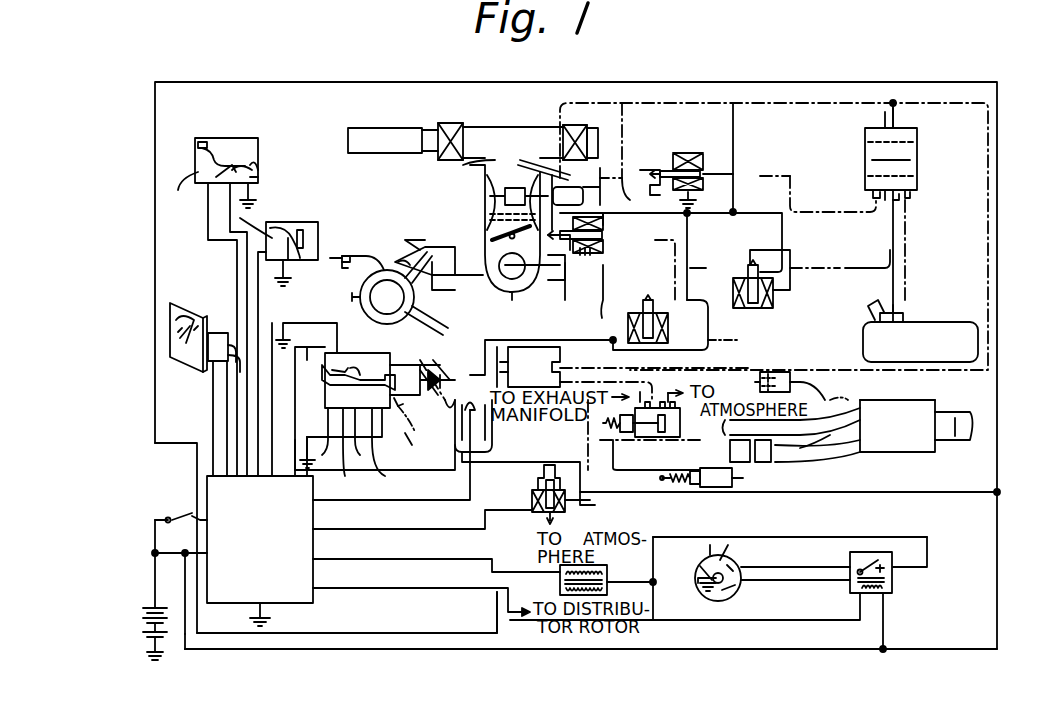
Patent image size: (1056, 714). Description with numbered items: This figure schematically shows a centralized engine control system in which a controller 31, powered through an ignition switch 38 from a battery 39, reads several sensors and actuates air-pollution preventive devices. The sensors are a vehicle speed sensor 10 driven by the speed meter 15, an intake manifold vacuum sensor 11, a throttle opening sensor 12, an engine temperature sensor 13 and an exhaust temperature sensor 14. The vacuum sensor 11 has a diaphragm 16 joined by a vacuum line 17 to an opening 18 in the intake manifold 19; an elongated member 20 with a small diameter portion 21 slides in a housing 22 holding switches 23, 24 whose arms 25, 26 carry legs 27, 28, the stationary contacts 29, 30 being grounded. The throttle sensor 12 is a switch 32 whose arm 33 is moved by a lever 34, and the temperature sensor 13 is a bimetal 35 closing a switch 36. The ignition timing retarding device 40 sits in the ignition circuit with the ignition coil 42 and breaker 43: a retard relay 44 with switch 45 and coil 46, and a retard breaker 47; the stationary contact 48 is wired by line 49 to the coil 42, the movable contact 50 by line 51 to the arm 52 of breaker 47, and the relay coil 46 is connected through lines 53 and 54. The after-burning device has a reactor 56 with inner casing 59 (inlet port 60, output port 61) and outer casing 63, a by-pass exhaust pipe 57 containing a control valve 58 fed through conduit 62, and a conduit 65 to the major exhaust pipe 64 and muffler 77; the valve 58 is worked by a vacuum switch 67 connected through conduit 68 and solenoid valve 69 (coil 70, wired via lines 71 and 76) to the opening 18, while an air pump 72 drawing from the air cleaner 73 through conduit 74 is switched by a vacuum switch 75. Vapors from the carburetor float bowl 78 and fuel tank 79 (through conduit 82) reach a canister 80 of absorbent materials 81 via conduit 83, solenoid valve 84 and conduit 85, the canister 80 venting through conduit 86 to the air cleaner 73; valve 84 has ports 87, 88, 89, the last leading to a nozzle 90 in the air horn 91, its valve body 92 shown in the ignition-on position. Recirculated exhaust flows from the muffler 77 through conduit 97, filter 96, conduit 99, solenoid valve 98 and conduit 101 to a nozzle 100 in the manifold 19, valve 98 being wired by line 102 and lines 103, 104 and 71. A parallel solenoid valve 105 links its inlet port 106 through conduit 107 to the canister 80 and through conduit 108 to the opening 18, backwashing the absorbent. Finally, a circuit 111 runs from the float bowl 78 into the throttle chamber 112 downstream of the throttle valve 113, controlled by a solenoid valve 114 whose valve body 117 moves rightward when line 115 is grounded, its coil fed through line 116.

The vehicle speed sensor 10 is at (220, 333).
The intake manifold vacuum sensor 11 is at (404, 455).
The throttle opening sensor 12 is at (333, 228).
The engine temperature sensor 13 is at (260, 146).
The exhaust temperature sensor 14 is at (358, 292).
The speed meter 15 is at (187, 308).
The diaphragm 16 is at (416, 421).
The vacuum line 17 is at (437, 368).
The opening 18 is at (454, 282).
The intake manifold 19 is at (462, 233).
The elongated member 20 is at (360, 358).
The small diameter portion 21 is at (325, 380).
The housing 22 is at (313, 500).
The switch 23 is at (340, 350).
The switch 24 is at (369, 438).
The arm 25 is at (383, 297).
The arm 26 is at (389, 449).
The leg 27 is at (332, 372).
The leg 28 is at (355, 449).
The stationary contact 29 is at (355, 368).
The stationary contact 30 is at (337, 438).
The controller 31 is at (270, 557).
The switch 32 is at (258, 262).
The arm 33 is at (245, 220).
The lever 34 is at (302, 230).
The bimetal 35 is at (181, 192).
The switch 36 is at (252, 170).
The ignition switch 38 is at (172, 517).
The battery 39 is at (143, 608).
The ignition timing retarding device 40 is at (812, 628).
The ignition coil 42 is at (607, 570).
The breaker 43 is at (696, 582).
The retard relay 44 is at (903, 546).
The relay switch 45 is at (862, 552).
The relay coil 46 is at (890, 590).
The retard breaker 47 is at (745, 570).
The stationary contact 48 is at (885, 568).
The line 49 is at (808, 537).
The movable contact 50 is at (858, 578).
The line 51 is at (795, 575).
The arm 52 is at (720, 560).
The line 53 is at (555, 652).
The line 54 is at (395, 612).
The reactor 56 is at (420, 251).
The by-pass exhaust pipe 57 is at (825, 448).
The control valve 58 is at (745, 462).
The inner casing 59 is at (437, 242).
The inlet port 60 is at (348, 258).
The output port 61 is at (410, 322).
The conduit 62 is at (668, 447).
The outer casing 63 is at (385, 250).
The major exhaust pipe 64 is at (812, 446).
The conduit 65 is at (470, 462).
The vacuum switch 67 is at (705, 490).
The conduit 68 is at (618, 490).
The solenoid valve 69 is at (532, 510).
The coil 70 is at (565, 508).
The line 71 is at (697, 652).
The air pump 72 is at (556, 356).
The air cleaner 73 is at (542, 125).
The conduit 74 is at (645, 100).
The vacuum switch 75 is at (595, 445).
The line 76 is at (392, 578).
The muffler 77 is at (910, 400).
The carburetor float bowl 78 is at (600, 168).
The fuel tank 79 is at (955, 322).
The canister 80 is at (925, 136).
The absorbent materials 81 is at (912, 160).
The conduit 82 is at (908, 255).
The conduit 83 is at (622, 178).
The solenoid valve 84 is at (690, 153).
The conduit 85 is at (822, 210).
The conduit 86 is at (890, 118).
The port 87 is at (733, 165).
The port 88 is at (680, 205).
The port 89 is at (645, 165).
The nozzle 90 is at (512, 160).
The air horn 91 is at (470, 166).
The valve body 92 is at (733, 160).
The filter 96 is at (795, 382).
The conduit 97 is at (848, 400).
The solenoid valve 98 is at (636, 306).
The conduit 99 is at (741, 338).
The nozzle 100 is at (512, 292).
The conduit 101 is at (598, 302).
The line 102 is at (388, 548).
The line 103 is at (716, 268).
The line 104 is at (997, 330).
The solenoid valve 105 is at (780, 294).
The inlet port 106 is at (782, 268).
The conduit 107 is at (868, 254).
The conduit 108 is at (665, 262).
The circuit 111 is at (565, 300).
The throttle chamber 112 is at (540, 275).
The throttle valve 113 is at (492, 238).
The solenoid valve 114 is at (597, 215).
The line 115 is at (384, 518).
The line 116 is at (648, 214).
The valve body 117 is at (600, 236).